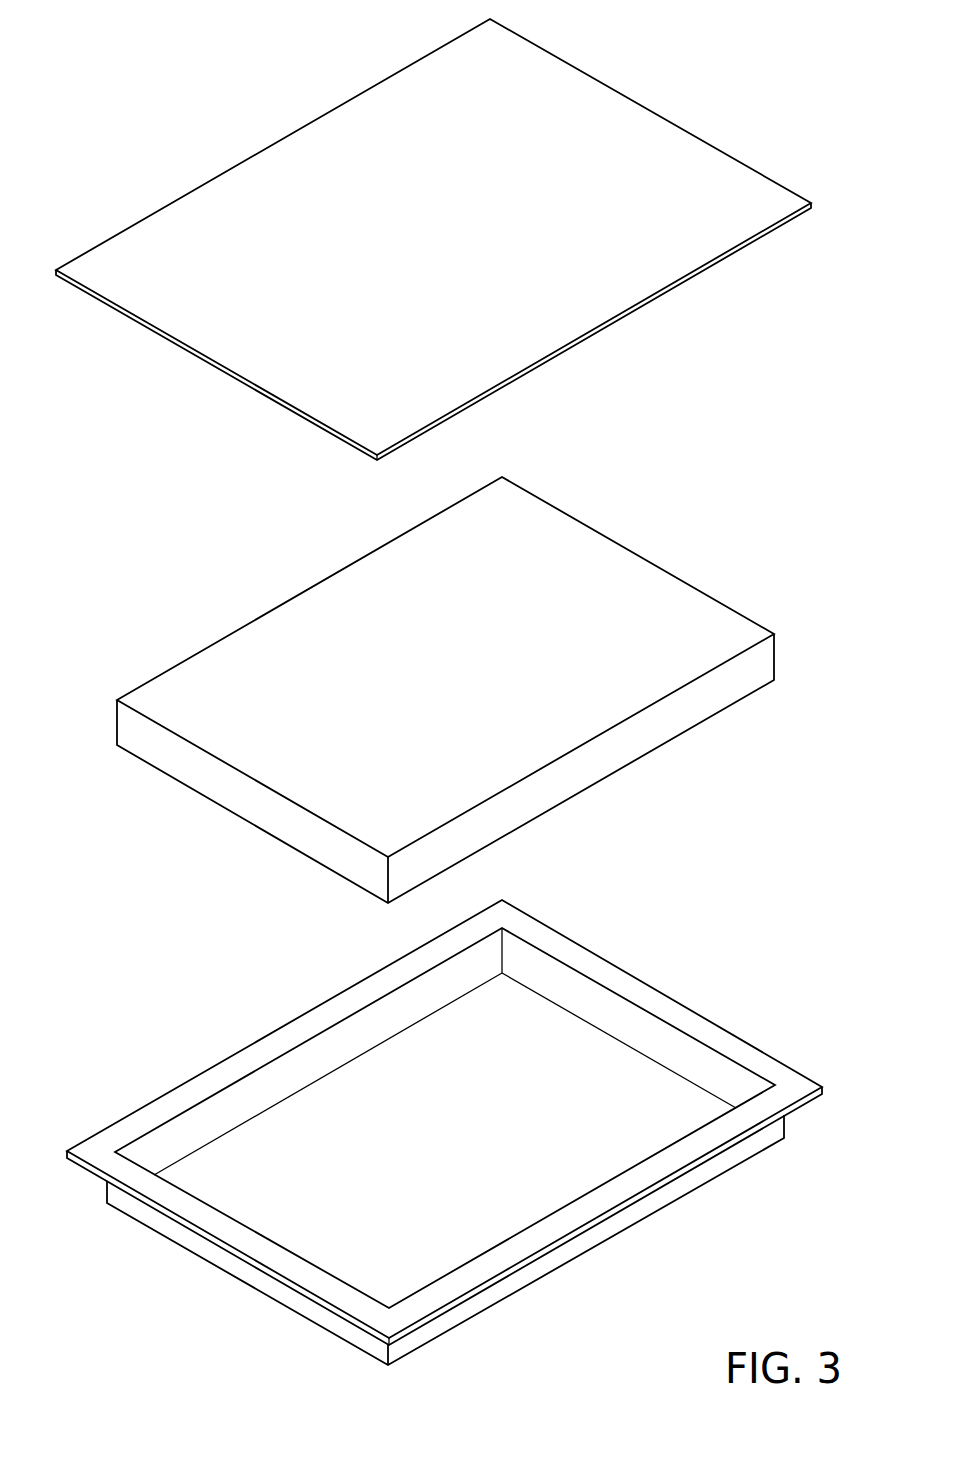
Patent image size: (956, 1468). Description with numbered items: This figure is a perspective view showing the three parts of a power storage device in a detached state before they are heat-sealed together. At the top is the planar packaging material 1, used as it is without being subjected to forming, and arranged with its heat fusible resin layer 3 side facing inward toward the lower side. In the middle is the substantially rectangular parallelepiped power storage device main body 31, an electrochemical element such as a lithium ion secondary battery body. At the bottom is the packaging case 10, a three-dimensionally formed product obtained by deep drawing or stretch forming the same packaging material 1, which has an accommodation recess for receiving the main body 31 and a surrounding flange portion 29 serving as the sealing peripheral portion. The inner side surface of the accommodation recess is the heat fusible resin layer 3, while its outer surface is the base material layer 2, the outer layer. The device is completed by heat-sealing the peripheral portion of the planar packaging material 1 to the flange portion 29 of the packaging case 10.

The packaging material 1 is at (633, 127).
The power storage device main body 31 is at (612, 567).
The packaging case 10 is at (444, 1119).
The flange portion 29 is at (661, 1002).
The heat fusible resin layer 3 is at (557, 1058).
The base material layer 2 is at (575, 1243).